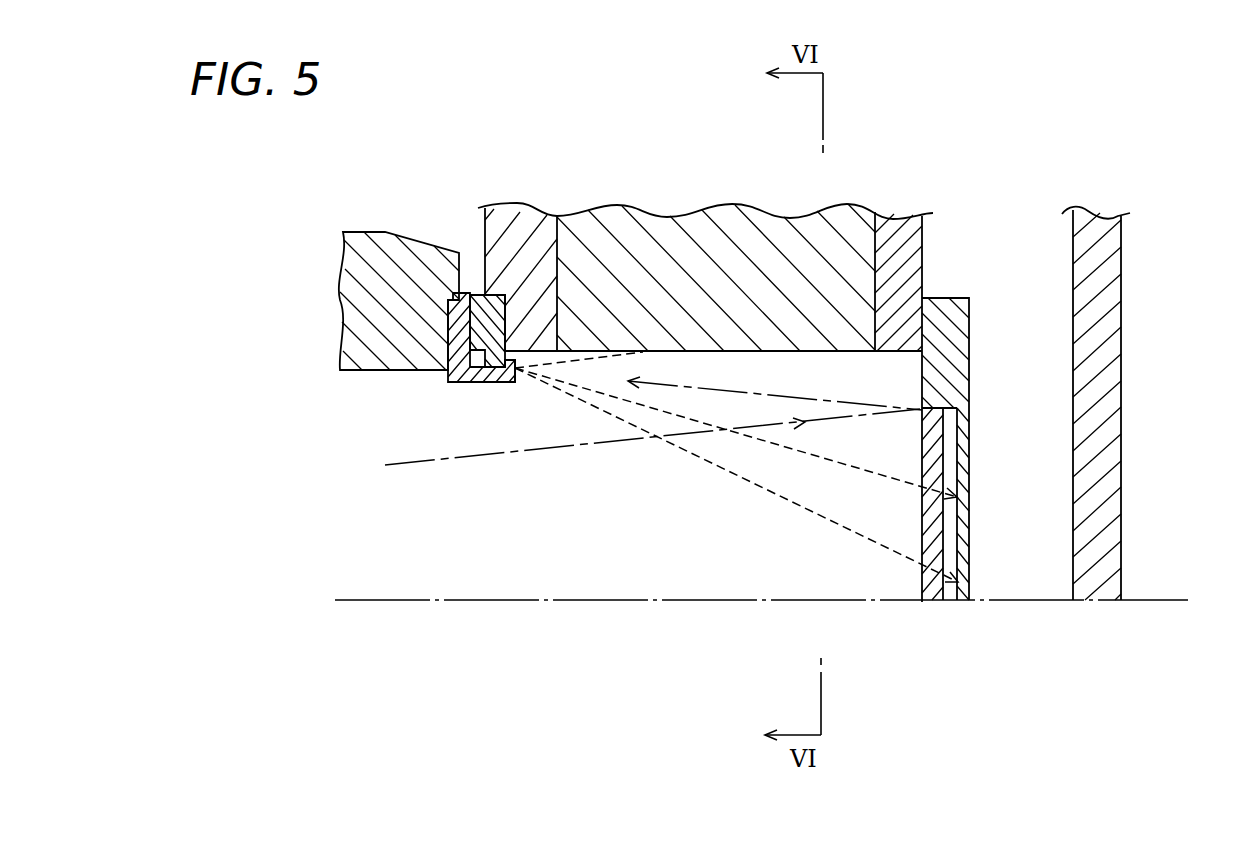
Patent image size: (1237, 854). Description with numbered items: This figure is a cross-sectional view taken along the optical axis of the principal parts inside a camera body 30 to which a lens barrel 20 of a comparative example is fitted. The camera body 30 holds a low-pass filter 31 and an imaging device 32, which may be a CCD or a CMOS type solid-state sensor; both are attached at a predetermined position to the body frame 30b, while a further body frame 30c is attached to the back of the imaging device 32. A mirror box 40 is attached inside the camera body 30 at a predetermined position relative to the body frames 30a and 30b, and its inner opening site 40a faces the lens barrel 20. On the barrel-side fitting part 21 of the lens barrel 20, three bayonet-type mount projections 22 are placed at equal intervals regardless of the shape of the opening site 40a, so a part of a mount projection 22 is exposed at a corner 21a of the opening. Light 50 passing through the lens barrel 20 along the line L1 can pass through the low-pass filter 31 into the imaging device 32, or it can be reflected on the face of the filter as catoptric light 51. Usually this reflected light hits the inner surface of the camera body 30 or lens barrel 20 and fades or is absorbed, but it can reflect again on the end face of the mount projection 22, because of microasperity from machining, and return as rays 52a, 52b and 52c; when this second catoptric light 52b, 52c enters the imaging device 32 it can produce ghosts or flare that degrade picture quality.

The lens barrel 20 is at (378, 250).
The barrel-side fitting part 21 is at (468, 293).
The corner 21a is at (517, 371).
The barrel-side mount projection 22 is at (506, 335).
The camera body 30 is at (690, 203).
The body frame 30a is at (518, 237).
The body frame 30b is at (893, 240).
The body frame 30c is at (1108, 362).
The low-pass filter 31 is at (935, 603).
The imaging device 32 is at (962, 605).
The mirror box 40 is at (778, 240).
The inner opening site 40a is at (823, 353).
The light 50 is at (462, 470).
The catoptric light 51 is at (755, 394).
The first light ray 52a is at (590, 360).
The second catoptric light 52b is at (772, 443).
The second catoptric light 52c is at (810, 513).
The reference line L1 is at (385, 602).